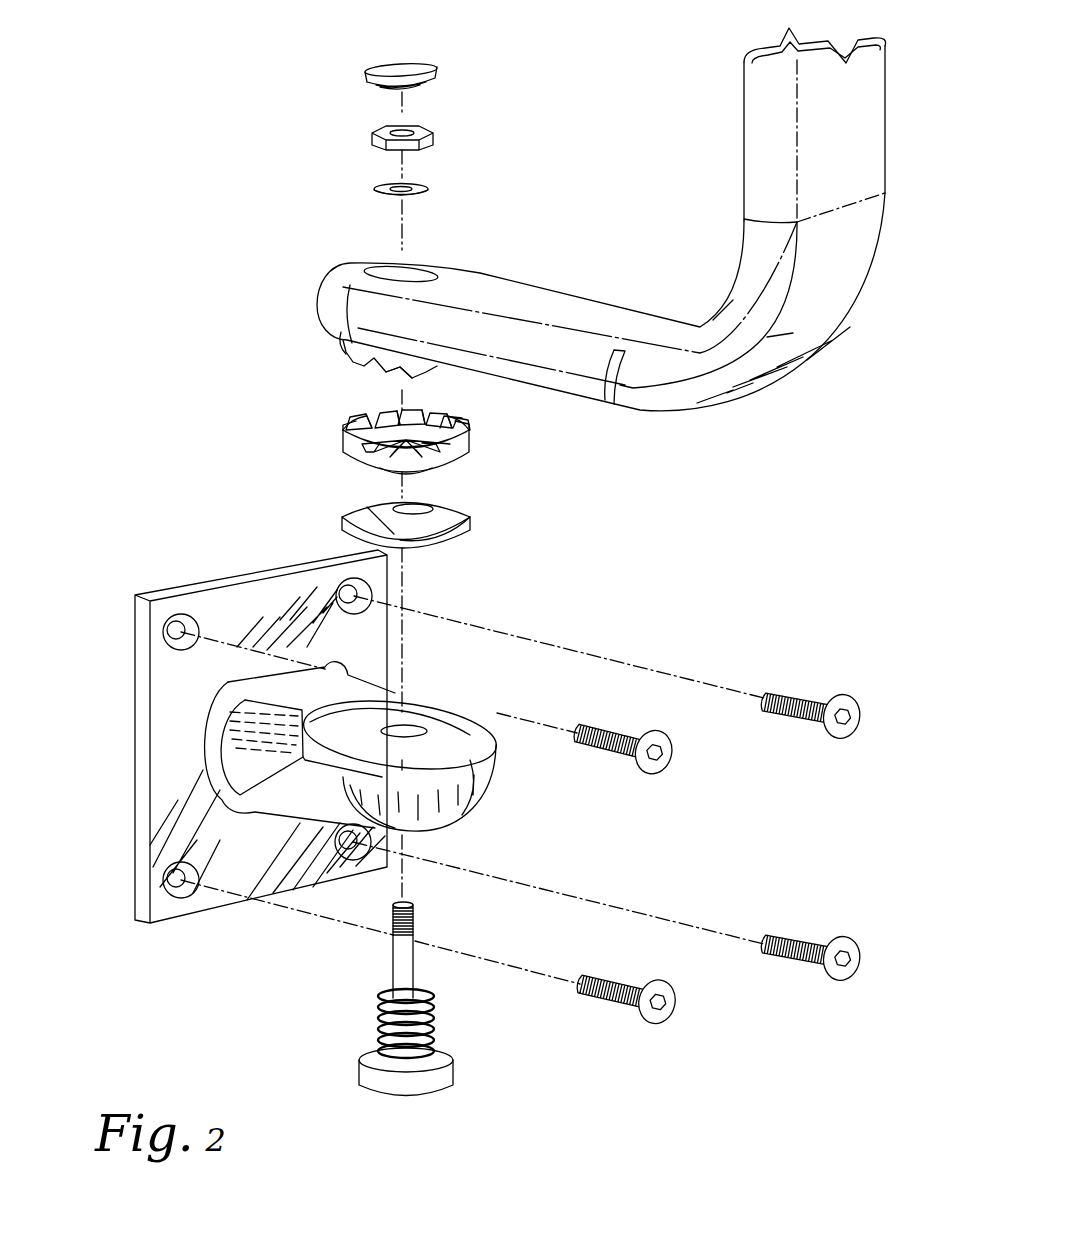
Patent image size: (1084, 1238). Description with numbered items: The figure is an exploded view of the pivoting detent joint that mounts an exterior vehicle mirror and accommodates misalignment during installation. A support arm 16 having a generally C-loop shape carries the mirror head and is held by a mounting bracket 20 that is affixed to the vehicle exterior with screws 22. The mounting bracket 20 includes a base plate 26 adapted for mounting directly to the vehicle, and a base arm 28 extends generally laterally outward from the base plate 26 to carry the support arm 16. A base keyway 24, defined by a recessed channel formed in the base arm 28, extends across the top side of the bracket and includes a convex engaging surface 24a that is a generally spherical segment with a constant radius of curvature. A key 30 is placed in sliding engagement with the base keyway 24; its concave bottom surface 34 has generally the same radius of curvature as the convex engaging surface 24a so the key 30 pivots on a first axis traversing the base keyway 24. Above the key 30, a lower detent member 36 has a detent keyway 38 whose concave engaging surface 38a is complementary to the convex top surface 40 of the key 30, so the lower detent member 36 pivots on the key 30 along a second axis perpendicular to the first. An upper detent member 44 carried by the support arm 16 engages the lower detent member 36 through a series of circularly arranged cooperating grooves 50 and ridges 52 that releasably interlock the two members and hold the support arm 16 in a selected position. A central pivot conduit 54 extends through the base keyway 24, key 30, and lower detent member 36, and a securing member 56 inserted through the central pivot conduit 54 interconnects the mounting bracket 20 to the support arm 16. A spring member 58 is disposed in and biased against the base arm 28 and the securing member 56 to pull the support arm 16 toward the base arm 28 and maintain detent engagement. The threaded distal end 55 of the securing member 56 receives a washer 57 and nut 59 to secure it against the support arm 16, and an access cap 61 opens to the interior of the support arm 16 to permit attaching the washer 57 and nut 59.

The support arm 16 is at (635, 219).
The mounting bracket 20 is at (377, 831).
The screws 22 is at (673, 760).
The base keyway 24 is at (293, 855).
The convex engaging surface 24a is at (443, 733).
The base plate 26 is at (140, 678).
The base arm 28 is at (467, 807).
The key 30 is at (412, 538).
The concave bottom surface 34 is at (443, 535).
The lower detent member 36 is at (350, 424).
The detent keyway 38 is at (393, 417).
The concave engaging surface 38a is at (408, 465).
The convex top surface 40 is at (367, 510).
The upper detent member 44 is at (364, 358).
The grooves 50 is at (407, 368).
The ridges 52 is at (352, 420).
The central pivot conduit 54 is at (463, 425).
The distal end 55 is at (413, 913).
The securing member 56 is at (413, 986).
The washer 57 is at (428, 186).
The spring member 58 is at (433, 1017).
The nut 59 is at (433, 131).
The access cap 61 is at (430, 68).